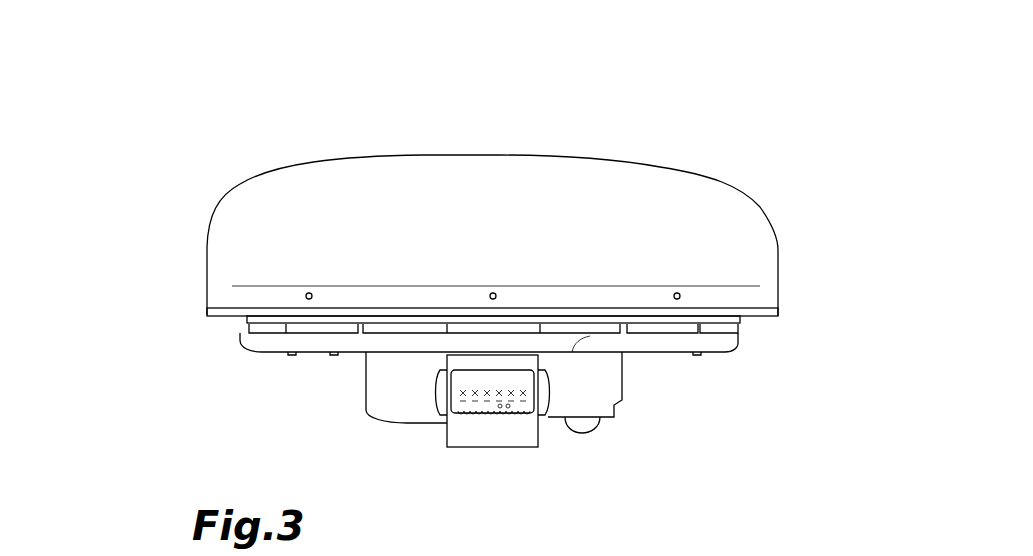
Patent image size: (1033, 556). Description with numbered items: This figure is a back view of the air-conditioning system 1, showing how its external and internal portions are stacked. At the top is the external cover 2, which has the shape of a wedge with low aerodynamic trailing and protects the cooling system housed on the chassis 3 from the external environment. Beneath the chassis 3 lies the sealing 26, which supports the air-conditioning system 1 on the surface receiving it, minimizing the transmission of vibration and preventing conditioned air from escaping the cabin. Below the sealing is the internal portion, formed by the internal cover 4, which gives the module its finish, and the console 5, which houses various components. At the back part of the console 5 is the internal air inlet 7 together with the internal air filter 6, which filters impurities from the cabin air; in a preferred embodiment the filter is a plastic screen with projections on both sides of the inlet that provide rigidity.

The air-conditioning system 1 is at (176, 72).
The external cover 2 is at (647, 197).
The chassis 3 is at (212, 312).
The sealing 26 is at (247, 318).
The internal cover 4 is at (257, 350).
The console 5 is at (366, 390).
The internal air filter 6 is at (550, 383).
The internal air inlet 7 is at (465, 395).